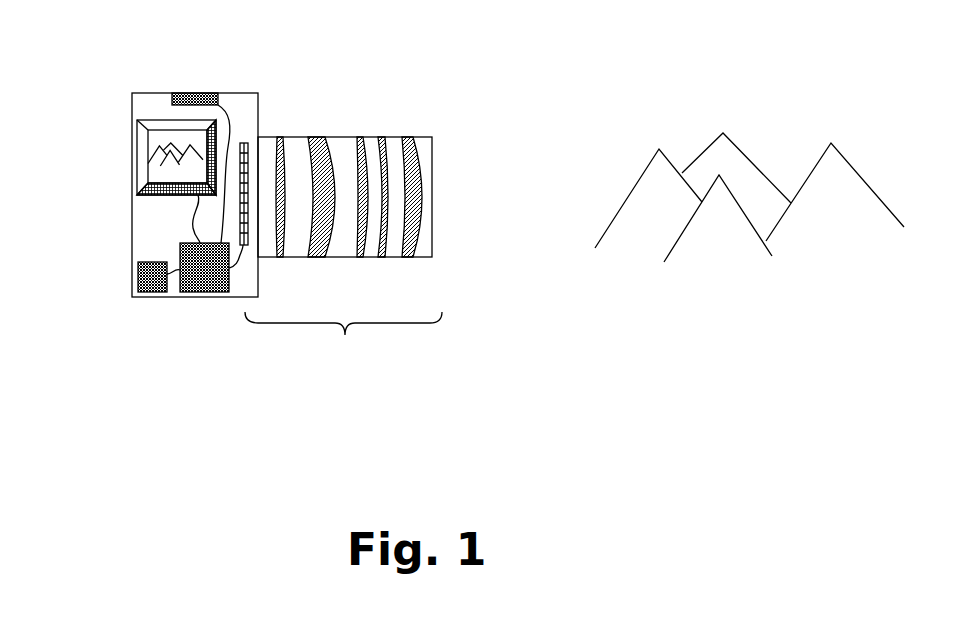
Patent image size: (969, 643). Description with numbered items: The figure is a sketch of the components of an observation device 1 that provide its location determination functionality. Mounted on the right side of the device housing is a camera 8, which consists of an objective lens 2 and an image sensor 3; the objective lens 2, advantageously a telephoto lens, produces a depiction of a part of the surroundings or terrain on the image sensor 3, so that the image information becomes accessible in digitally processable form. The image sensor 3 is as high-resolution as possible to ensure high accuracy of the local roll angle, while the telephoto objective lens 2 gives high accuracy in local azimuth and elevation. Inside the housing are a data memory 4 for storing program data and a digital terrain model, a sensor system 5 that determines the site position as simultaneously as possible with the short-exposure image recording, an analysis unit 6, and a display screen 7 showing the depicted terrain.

The observation device 1 is at (151, 164).
The objective lens 2 is at (345, 165).
The image sensor 3 is at (220, 129).
The data memory 4 is at (123, 255).
The sensor system 5 is at (183, 77).
The analysis unit 6 is at (191, 293).
The display screen 7 is at (122, 146).
The camera 8 is at (343, 360).